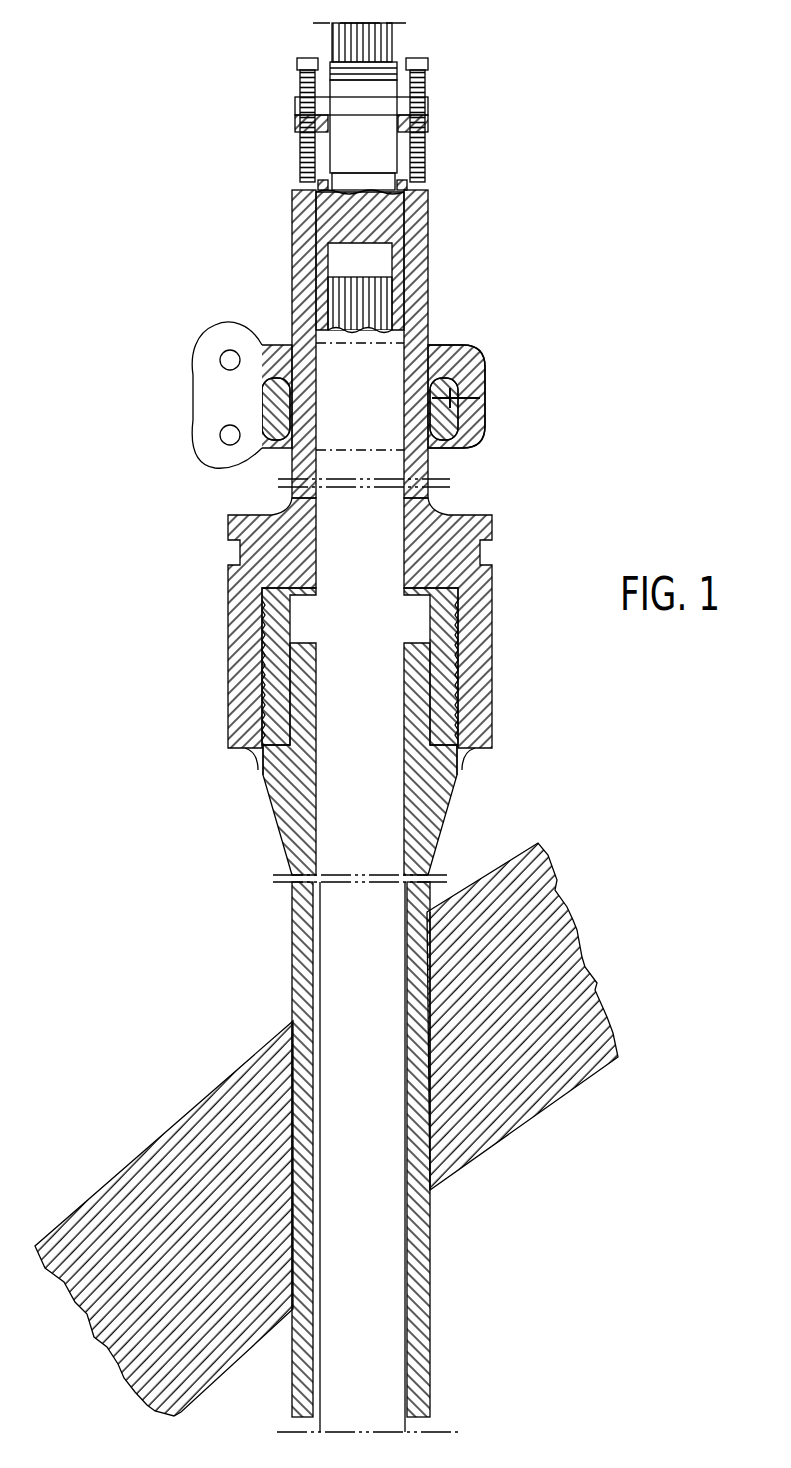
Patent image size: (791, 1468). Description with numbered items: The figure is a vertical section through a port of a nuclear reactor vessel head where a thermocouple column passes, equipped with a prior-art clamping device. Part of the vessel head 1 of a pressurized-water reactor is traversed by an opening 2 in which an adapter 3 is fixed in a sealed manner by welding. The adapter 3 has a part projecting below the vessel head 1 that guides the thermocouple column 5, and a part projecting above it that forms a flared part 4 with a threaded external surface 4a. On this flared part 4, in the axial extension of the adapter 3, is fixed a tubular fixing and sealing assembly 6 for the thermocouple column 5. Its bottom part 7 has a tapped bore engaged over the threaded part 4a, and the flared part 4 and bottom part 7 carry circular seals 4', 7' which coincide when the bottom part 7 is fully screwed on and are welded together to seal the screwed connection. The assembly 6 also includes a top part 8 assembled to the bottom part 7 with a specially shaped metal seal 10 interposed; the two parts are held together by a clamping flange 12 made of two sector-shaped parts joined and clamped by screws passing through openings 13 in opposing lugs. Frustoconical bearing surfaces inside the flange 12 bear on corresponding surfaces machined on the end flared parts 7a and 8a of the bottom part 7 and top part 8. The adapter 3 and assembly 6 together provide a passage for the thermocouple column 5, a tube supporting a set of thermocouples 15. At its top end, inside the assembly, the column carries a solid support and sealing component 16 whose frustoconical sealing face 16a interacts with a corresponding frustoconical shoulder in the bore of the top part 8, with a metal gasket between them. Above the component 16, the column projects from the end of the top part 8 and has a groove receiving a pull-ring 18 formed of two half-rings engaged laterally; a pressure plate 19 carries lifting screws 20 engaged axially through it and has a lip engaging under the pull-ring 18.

The vessel head 1 is at (563, 1070).
The opening 2 is at (432, 1116).
The adapter 3 is at (308, 961).
The flared part 4 is at (342, 762).
The circular seal 4' is at (327, 781).
The threaded external surface 4a is at (455, 690).
The thermocouple column 5 is at (381, 1312).
The fixing and sealing assembly 6 is at (484, 508).
The bottom part 7 is at (333, 623).
The circular seal 7' is at (322, 762).
The end flared part 7a is at (457, 450).
The top part 8 is at (417, 270).
The end flared part 8a is at (448, 345).
The metal seal 10 is at (484, 395).
The clamping flange 12 is at (483, 348).
The openings 13 is at (222, 428).
The thermocouples 15 is at (352, 315).
The support and sealing component 16 is at (325, 222).
The frustoconical sealing face 16a is at (292, 193).
The pull-ring 18 is at (380, 106).
The pressure plate 19 is at (427, 115).
The lifting screws 20 is at (425, 140).